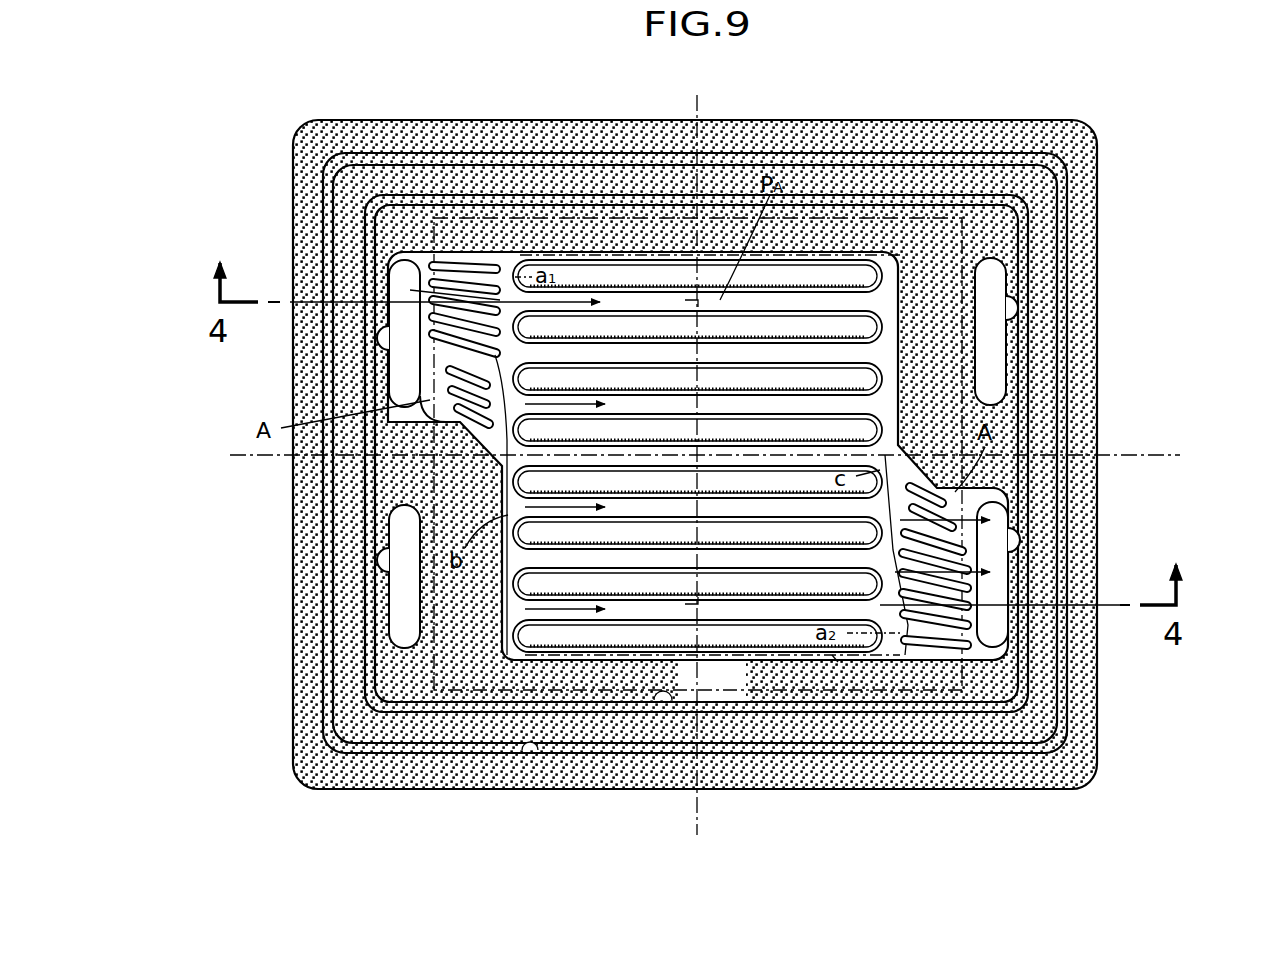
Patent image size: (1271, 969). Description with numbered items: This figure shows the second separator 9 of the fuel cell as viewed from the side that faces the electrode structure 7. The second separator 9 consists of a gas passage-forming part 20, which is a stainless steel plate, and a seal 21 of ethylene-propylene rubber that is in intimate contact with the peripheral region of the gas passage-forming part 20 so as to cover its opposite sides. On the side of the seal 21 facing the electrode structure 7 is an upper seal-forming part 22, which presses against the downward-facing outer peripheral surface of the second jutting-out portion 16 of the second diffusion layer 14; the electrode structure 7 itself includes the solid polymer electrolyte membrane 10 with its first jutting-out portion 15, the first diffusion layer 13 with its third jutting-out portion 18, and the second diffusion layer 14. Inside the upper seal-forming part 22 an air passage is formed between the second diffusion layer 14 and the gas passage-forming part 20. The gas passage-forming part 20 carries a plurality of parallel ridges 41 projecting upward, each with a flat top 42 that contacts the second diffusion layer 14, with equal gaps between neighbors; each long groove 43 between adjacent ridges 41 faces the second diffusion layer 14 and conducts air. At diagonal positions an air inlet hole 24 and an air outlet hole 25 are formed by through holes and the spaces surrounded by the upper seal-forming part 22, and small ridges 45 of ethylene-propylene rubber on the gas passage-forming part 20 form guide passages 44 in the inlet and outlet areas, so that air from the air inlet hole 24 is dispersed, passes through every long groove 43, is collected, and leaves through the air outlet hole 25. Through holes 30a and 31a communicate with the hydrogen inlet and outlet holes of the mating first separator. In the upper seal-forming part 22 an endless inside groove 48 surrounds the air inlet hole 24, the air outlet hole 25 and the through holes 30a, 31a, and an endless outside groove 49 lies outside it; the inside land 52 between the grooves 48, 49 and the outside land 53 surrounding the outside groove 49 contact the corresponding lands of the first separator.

The electrode structure 7 is at (870, 214).
The second separator 9 is at (1103, 176).
The solid polymer electrolyte membrane 10 is at (430, 238).
The first diffusion layer 13 is at (808, 248).
The second diffusion layer 14 is at (546, 664).
The first jutting-out portion 15 is at (470, 195).
The second jutting-out portion 16 is at (545, 212).
The third jutting-out portion 18 is at (834, 660).
The gas passage-forming part 20 is at (883, 300).
The seal 21 is at (1103, 360).
The upper seal-forming part 22 is at (1085, 413).
The air inlet hole 24 is at (430, 353).
The air outlet hole 25 is at (1003, 535).
The through hole 30a is at (398, 576).
The through hole 31a is at (1003, 303).
The ridges 41 is at (642, 303).
The top 42 is at (862, 328).
The long groove 43 is at (888, 458).
The guide passages 44 is at (527, 416).
The small ridges 45 is at (433, 275).
The endless inside groove 48 is at (665, 704).
The endless outside groove 49 is at (532, 752).
The inside land 52 is at (752, 735).
The outside land 53 is at (596, 774).